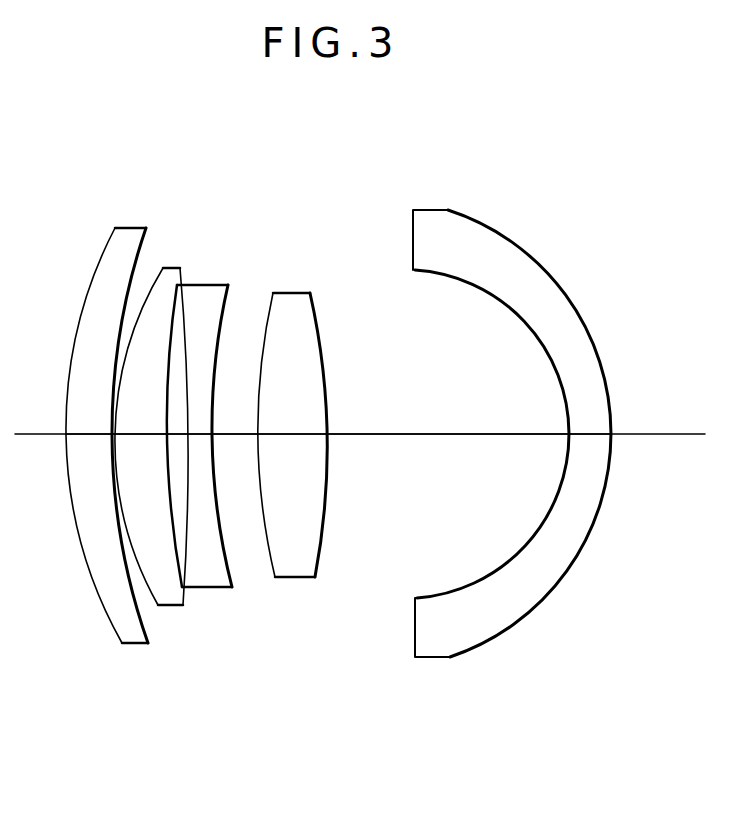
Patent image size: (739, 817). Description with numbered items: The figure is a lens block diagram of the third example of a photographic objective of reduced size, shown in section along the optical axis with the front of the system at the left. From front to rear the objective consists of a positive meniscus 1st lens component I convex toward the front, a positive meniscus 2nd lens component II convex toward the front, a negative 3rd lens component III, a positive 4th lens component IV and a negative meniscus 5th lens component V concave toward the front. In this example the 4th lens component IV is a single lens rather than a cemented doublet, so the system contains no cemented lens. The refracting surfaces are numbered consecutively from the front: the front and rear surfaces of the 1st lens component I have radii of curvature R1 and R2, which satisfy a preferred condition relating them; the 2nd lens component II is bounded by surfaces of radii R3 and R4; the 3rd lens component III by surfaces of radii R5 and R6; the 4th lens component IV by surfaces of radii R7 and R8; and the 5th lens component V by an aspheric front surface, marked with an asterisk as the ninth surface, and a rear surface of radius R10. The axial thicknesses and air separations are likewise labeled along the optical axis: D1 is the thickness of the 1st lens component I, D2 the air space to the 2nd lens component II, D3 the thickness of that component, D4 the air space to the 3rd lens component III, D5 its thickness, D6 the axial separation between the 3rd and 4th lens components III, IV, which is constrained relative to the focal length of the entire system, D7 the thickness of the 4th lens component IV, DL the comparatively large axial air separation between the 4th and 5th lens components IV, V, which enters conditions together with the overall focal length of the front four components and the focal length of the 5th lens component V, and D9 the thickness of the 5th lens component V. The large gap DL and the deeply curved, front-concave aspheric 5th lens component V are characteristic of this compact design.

The 1st lens component I is at (80, 187).
The 2nd lens component II is at (190, 187).
The 3rd lens component III is at (230, 187).
The 4th lens component IV is at (245, 187).
The 5th lens component V is at (405, 187).
The radius of curvature of the front surface of the 1st lens component R1 is at (121, 645).
The radius of curvature of the rear surface of the 1st lens component R2 is at (147, 645).
The radius of curvature of the 3rd surface R3 is at (158, 607).
The radius of curvature of the 4th surface R4 is at (184, 607).
The radius of curvature of the 5th surface R5 is at (184, 590).
The radius of curvature of the 6th surface R6 is at (232, 590).
The radius of curvature of the 7th surface R7 is at (275, 580).
The radius of curvature of the 8th surface R8 is at (315, 580).
The radius of curvature of the 10th surface R10 is at (479, 653).
The axial thickness of the 1st lens component D1 is at (85, 436).
The air separation between the 1st and 2nd lens components D2 is at (112, 436).
The axial thickness of the 2nd lens component D3 is at (130, 436).
The air separation between the 2nd and 3rd lens components D4 is at (175, 436).
The axial thickness of the 3rd lens component D5 is at (197, 436).
The axial separation between the 3rd and 4th lens components D6 is at (235, 436).
The axial thickness of the 4th lens component D7 is at (288, 436).
The axial air separation between the 4th and 5th lens components DL is at (396, 436).
The axial thickness of the 5th lens component D9 is at (588, 436).